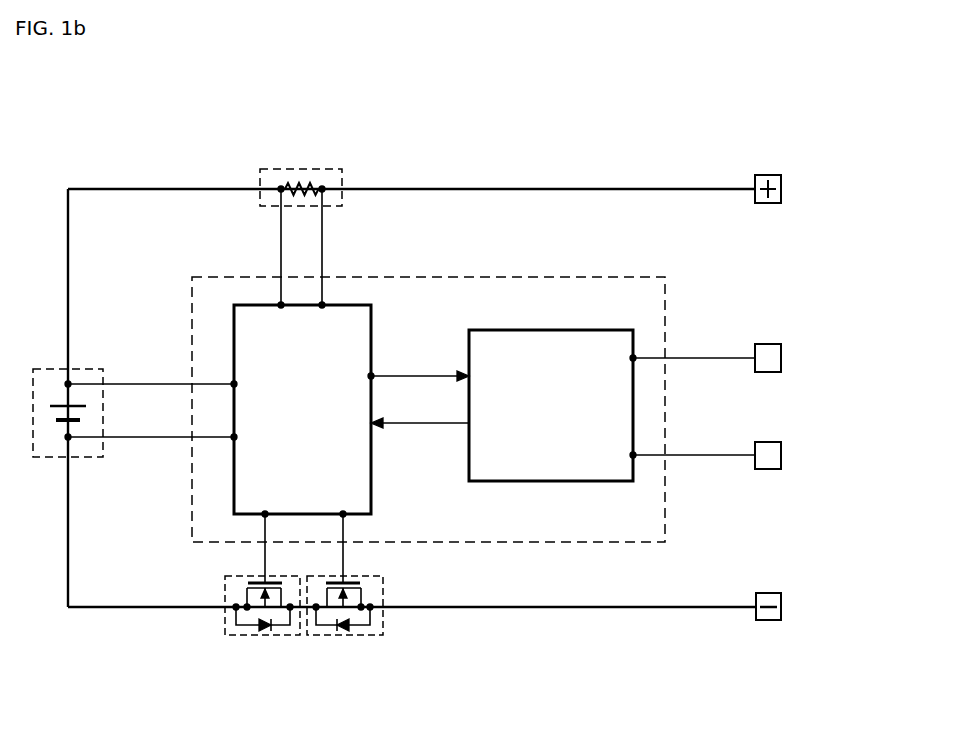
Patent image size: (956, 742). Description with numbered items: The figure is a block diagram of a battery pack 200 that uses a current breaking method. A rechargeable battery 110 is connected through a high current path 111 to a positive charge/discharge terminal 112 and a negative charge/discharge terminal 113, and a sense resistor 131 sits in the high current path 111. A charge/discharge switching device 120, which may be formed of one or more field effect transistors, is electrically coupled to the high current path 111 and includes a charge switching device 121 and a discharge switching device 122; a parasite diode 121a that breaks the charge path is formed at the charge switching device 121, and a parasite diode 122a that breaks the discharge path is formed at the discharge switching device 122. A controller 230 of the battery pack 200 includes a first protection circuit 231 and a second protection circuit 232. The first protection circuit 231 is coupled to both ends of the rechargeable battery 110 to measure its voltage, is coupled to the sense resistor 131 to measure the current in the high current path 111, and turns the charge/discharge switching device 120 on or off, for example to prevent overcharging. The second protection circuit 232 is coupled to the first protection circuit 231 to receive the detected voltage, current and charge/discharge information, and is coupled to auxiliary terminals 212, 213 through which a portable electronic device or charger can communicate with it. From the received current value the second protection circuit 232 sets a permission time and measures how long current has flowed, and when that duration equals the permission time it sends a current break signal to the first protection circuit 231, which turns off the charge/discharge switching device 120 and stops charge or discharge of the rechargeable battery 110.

The battery pack 200 is at (536, 146).
The high current path 111 is at (571, 189).
The positive charge/discharge terminal 112 is at (768, 175).
The negative charge/discharge terminal 113 is at (768, 593).
The sense resistor 131 is at (342, 200).
The controller 230 is at (598, 277).
The first protection circuit 231 is at (371, 322).
The second protection circuit 232 is at (535, 330).
The auxiliary terminal 213 is at (768, 344).
The auxiliary terminal 212 is at (768, 442).
The rechargeable battery 110 is at (80, 457).
The charge/discharge switching device 120 is at (348, 689).
The charge switching device 121 is at (345, 635).
The parasite diode 121a is at (350, 628).
The discharge switching device 122 is at (258, 635).
The parasite diode 122a is at (258, 633).